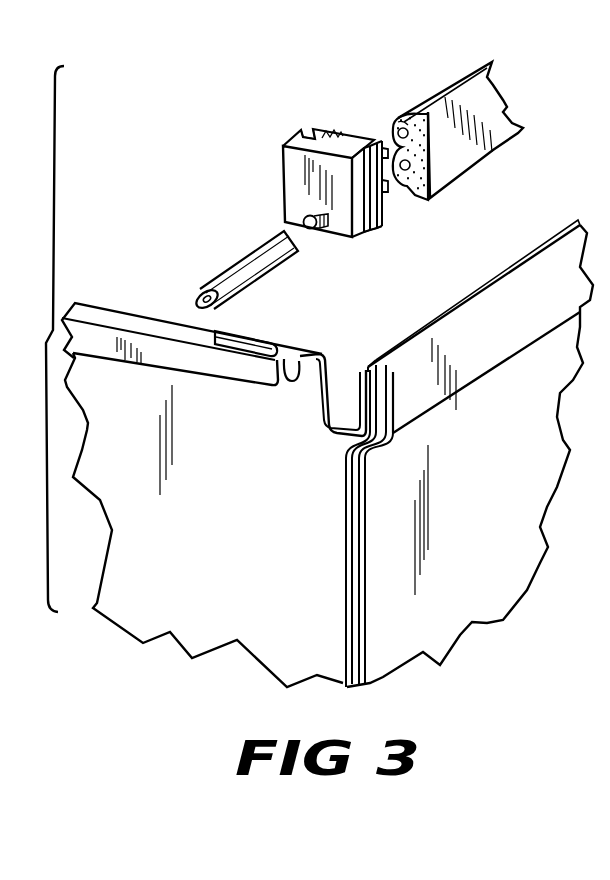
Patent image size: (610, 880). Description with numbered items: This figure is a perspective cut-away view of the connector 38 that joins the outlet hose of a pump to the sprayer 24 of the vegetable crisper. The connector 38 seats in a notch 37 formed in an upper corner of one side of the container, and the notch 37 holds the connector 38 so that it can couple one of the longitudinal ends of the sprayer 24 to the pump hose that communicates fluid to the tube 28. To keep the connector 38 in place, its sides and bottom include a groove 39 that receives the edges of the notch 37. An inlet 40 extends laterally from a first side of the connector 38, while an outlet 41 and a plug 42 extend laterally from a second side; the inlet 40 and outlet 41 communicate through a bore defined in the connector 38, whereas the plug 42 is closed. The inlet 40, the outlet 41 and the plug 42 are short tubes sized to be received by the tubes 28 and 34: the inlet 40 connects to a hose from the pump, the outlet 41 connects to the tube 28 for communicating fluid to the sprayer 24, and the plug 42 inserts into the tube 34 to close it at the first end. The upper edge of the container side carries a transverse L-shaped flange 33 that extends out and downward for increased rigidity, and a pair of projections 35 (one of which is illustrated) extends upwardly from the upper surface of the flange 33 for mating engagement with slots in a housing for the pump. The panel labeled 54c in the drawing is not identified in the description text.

The sprayer 24 is at (492, 148).
The tube 28 is at (420, 196).
The L-shaped flange 33 is at (297, 380).
The tube 34 is at (397, 120).
The projections 35 is at (256, 333).
The notch 37 is at (356, 368).
The connector 38 is at (296, 182).
The groove 39 is at (301, 139).
The inlet 40 is at (318, 230).
The outlet 41 is at (385, 192).
The plug 42 is at (381, 139).
The panel 54c is at (204, 547).